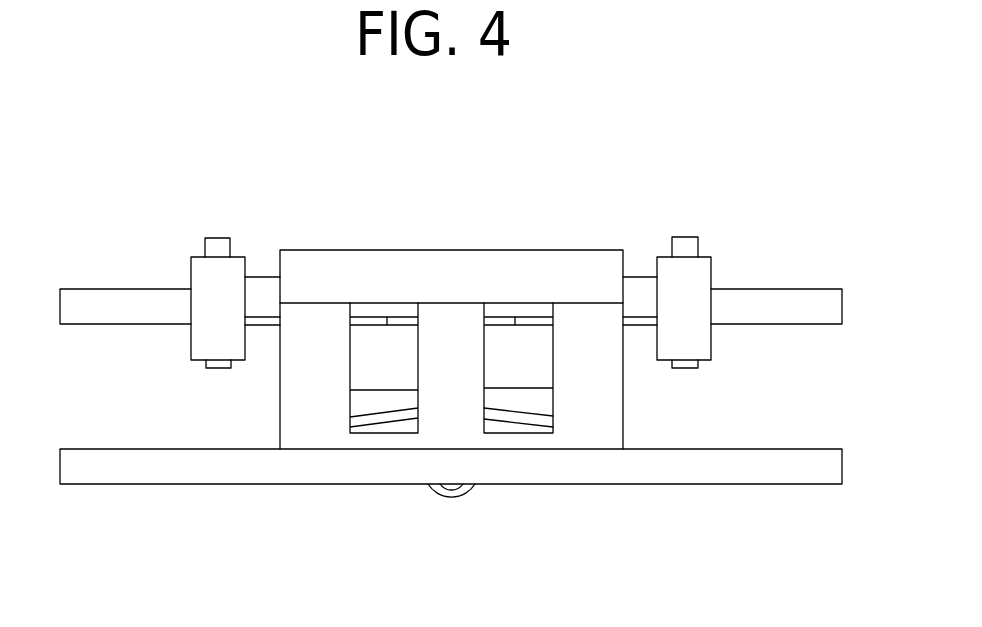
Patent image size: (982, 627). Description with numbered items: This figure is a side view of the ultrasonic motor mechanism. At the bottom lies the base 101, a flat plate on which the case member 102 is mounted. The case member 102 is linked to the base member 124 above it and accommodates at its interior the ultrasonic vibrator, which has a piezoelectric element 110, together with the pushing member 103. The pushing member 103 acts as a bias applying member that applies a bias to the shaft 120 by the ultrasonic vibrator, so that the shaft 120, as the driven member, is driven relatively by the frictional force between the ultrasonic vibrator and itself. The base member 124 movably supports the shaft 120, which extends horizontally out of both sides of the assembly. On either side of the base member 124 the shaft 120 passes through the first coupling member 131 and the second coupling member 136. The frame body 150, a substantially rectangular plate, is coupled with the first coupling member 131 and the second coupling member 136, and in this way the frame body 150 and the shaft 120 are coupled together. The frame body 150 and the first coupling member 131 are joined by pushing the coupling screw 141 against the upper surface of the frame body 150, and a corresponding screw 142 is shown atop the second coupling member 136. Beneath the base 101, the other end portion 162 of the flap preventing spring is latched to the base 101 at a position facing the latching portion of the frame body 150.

The base 101 is at (151, 470).
The case member 102 is at (314, 440).
The pushing member 103 is at (522, 420).
The piezoelectric element 110 is at (605, 434).
The shaft 120 is at (263, 290).
The base member 124 is at (451, 257).
The first coupling member 131 is at (203, 278).
The second coupling member 136 is at (702, 277).
The coupling screw 141 is at (220, 246).
The right fixing member 142 is at (685, 243).
The frame body 150 is at (83, 300).
The other end portion of flap preventing spring 162 is at (447, 500).